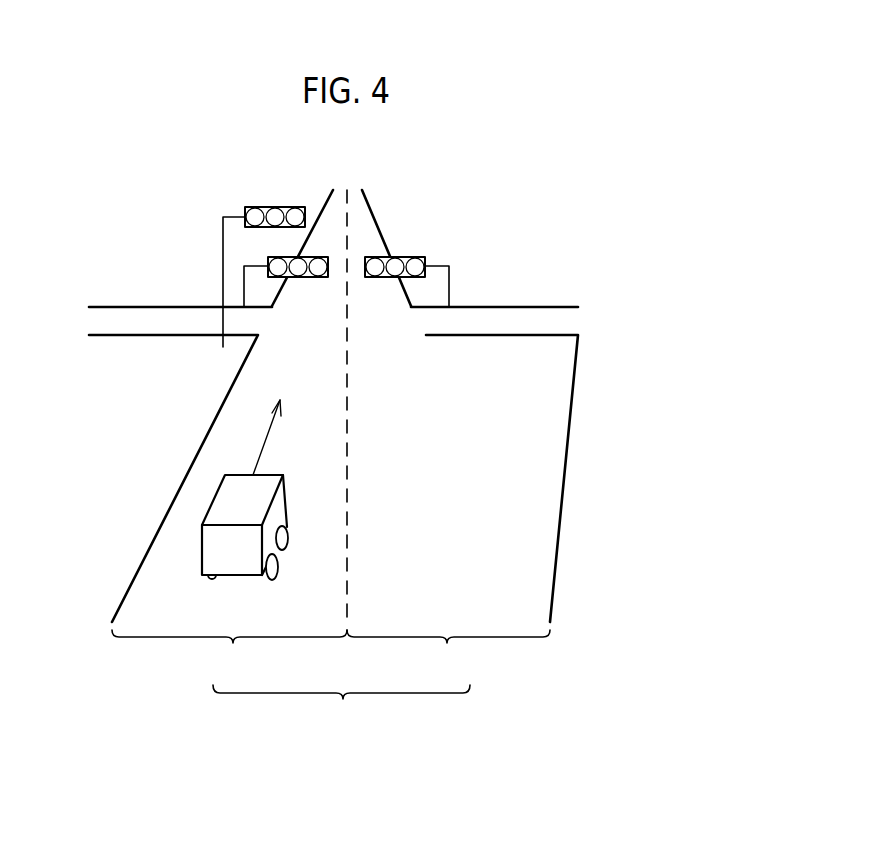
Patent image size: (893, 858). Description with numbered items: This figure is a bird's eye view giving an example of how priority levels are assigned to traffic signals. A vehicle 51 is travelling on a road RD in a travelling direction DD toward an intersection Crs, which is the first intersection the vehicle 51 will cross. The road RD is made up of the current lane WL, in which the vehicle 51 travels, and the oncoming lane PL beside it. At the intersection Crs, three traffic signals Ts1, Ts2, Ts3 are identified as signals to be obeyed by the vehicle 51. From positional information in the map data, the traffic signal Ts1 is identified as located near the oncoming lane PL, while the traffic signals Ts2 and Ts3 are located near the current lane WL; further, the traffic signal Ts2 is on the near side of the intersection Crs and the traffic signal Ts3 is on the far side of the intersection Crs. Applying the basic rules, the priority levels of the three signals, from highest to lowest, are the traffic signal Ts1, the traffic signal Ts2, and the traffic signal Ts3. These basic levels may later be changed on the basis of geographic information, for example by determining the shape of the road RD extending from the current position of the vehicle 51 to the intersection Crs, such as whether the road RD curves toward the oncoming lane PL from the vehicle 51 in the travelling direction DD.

The traffic signal Ts1 is at (408, 257).
The traffic signal Ts2 is at (278, 205).
The traffic signal Ts3 is at (308, 257).
The intersection Crs is at (347, 320).
The vehicle 51 is at (210, 507).
The travelling direction DD is at (267, 440).
The current lane WL is at (229, 654).
The oncoming lane PL is at (448, 654).
The road RD is at (341, 711).